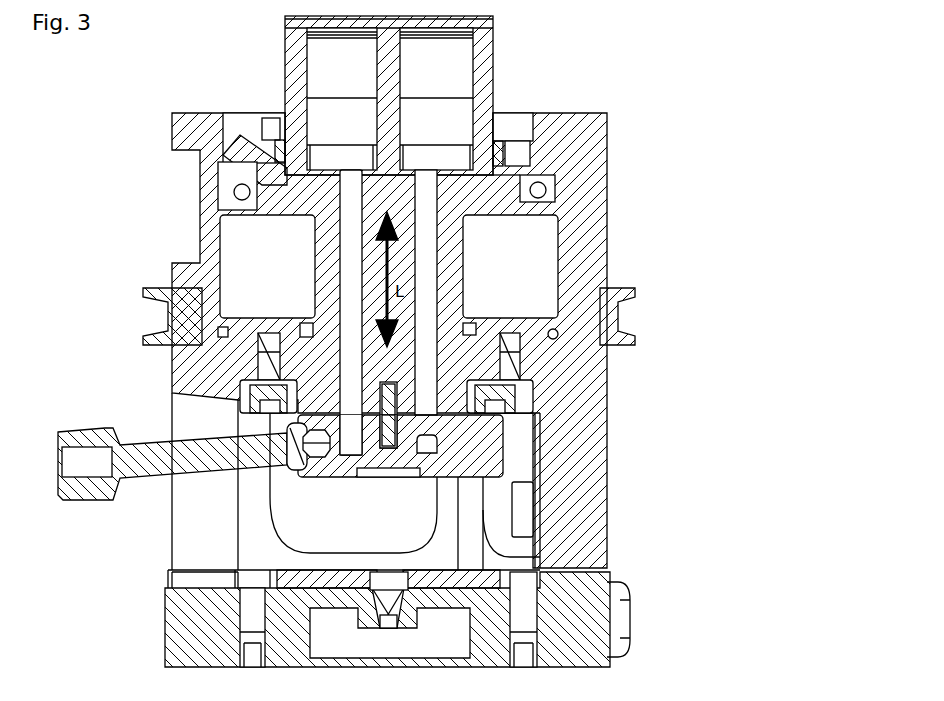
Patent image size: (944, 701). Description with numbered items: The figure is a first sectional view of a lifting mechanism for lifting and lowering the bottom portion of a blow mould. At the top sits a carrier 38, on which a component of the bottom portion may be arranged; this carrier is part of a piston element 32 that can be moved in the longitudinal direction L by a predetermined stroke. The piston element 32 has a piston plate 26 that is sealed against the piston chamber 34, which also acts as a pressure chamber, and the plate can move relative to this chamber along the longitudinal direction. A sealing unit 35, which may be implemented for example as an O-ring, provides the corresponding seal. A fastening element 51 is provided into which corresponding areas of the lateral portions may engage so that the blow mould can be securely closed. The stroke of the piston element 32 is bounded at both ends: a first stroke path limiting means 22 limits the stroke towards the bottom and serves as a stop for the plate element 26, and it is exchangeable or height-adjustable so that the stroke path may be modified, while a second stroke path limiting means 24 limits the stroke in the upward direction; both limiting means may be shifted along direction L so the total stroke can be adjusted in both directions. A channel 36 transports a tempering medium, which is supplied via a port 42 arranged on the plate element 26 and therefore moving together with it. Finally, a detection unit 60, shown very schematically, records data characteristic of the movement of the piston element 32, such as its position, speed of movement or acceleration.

The first stroke path limiting means 22 is at (317, 573).
The second stroke path limiting means 24 is at (293, 397).
The piston plate 26 is at (478, 437).
The piston element 32 is at (512, 175).
The piston chamber 34 is at (250, 250).
The sealing unit 35 is at (537, 197).
The channel 36 is at (427, 207).
The carrier 38 is at (488, 77).
The port 42 is at (97, 430).
The fastening element 51 is at (150, 293).
The detection unit 60 is at (523, 502).